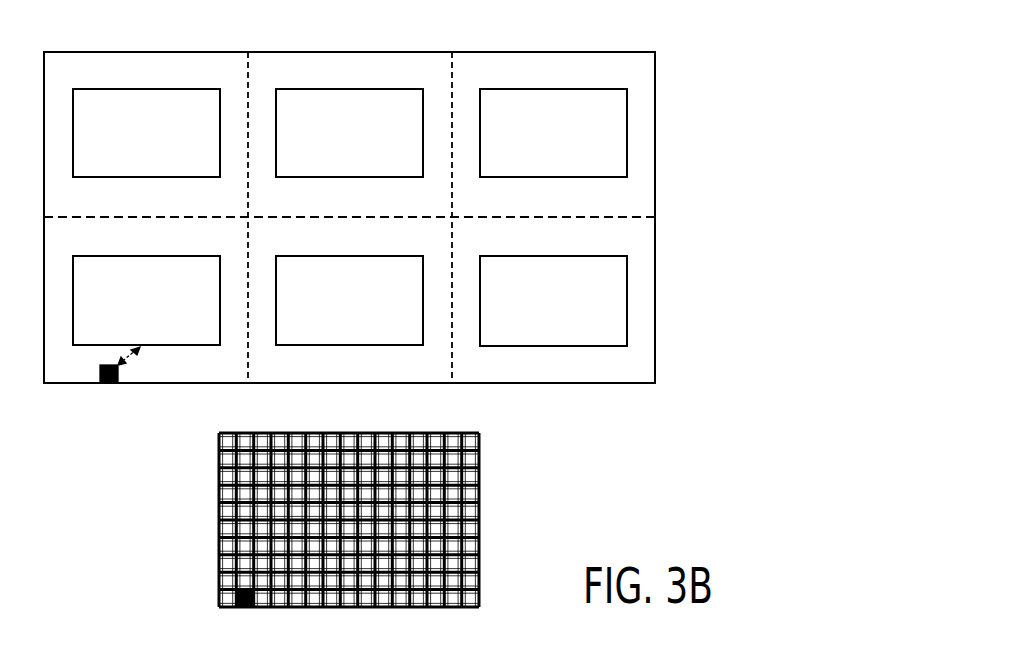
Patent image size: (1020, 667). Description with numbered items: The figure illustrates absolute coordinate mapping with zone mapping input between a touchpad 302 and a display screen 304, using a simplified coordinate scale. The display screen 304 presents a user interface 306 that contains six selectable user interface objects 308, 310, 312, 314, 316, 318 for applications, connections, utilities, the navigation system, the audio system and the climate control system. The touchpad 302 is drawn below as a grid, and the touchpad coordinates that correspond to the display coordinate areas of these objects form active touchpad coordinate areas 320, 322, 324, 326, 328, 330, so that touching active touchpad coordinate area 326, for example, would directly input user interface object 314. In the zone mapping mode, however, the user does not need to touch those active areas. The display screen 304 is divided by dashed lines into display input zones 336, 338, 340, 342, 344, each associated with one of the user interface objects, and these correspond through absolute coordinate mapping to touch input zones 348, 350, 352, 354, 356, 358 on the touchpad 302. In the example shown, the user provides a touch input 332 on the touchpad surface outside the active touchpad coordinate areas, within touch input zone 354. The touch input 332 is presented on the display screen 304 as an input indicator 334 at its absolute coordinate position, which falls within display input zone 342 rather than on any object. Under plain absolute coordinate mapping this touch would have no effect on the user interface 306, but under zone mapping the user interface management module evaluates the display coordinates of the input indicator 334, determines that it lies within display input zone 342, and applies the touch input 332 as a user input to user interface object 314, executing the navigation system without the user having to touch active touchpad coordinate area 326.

The touchpad 302 is at (480, 518).
The display screen 304 is at (655, 200).
The user interface 306 is at (496, 72).
The user interface object 308 is at (148, 89).
The user interface object 310 is at (352, 89).
The user interface object 312 is at (556, 89).
The user interface object 314 is at (148, 256).
The user interface object 316 is at (352, 256).
The user interface object 318 is at (556, 256).
The active touchpad coordinate area 320 is at (258, 462).
The active touchpad coordinate area 322 is at (345, 462).
The active touchpad coordinate area 324 is at (433, 462).
The active touchpad coordinate area 326 is at (258, 577).
The active touchpad coordinate area 328 is at (345, 577).
The active touchpad coordinate area 330 is at (433, 577).
The touch input 332 is at (236, 598).
The input indicator 334 is at (100, 377).
The display input zone 336 is at (148, 52).
The display input zone 338 is at (352, 52).
The display input zone 340 is at (556, 52).
The display input zone 342 is at (145, 383).
The display input zone 344 is at (442, 363).
The touch input zone 348 is at (219, 476).
The touch input zone 350 is at (325, 433).
The touch input zone 352 is at (480, 448).
The touch input zone 354 is at (219, 558).
The touch input zone 356 is at (330, 607).
The touch input zone 358 is at (480, 583).